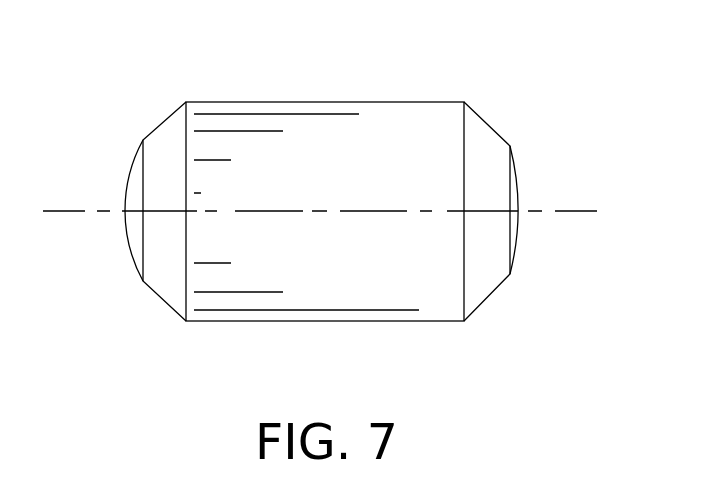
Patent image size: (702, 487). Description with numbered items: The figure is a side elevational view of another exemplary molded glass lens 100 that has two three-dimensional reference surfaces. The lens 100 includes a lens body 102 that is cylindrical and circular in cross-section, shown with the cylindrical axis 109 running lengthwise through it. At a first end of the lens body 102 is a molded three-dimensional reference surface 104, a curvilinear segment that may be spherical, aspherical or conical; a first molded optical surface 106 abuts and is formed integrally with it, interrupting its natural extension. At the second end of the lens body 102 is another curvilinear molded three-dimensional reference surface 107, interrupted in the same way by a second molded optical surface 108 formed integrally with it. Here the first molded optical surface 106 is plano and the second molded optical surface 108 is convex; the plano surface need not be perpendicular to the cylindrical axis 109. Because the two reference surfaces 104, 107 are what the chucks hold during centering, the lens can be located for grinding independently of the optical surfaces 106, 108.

The molded glass lens 100 is at (329, 195).
The lens body 102 is at (272, 100).
The molded three-dimensional reference surface 104 is at (492, 292).
The first molded optical surface 106 is at (513, 235).
The molded three-dimensional reference surface 107 is at (162, 300).
The second molded optical surface 108 is at (132, 168).
The cylindrical axis 109 is at (572, 210).